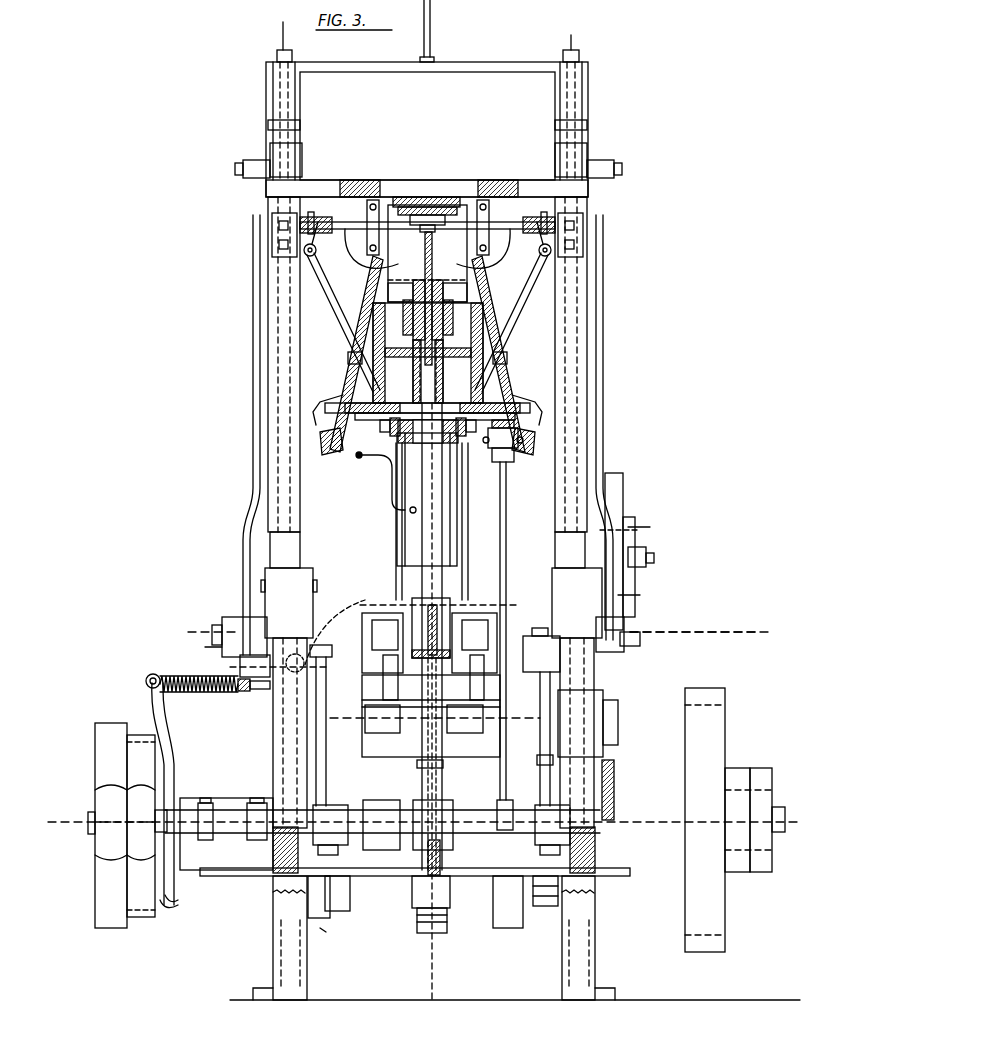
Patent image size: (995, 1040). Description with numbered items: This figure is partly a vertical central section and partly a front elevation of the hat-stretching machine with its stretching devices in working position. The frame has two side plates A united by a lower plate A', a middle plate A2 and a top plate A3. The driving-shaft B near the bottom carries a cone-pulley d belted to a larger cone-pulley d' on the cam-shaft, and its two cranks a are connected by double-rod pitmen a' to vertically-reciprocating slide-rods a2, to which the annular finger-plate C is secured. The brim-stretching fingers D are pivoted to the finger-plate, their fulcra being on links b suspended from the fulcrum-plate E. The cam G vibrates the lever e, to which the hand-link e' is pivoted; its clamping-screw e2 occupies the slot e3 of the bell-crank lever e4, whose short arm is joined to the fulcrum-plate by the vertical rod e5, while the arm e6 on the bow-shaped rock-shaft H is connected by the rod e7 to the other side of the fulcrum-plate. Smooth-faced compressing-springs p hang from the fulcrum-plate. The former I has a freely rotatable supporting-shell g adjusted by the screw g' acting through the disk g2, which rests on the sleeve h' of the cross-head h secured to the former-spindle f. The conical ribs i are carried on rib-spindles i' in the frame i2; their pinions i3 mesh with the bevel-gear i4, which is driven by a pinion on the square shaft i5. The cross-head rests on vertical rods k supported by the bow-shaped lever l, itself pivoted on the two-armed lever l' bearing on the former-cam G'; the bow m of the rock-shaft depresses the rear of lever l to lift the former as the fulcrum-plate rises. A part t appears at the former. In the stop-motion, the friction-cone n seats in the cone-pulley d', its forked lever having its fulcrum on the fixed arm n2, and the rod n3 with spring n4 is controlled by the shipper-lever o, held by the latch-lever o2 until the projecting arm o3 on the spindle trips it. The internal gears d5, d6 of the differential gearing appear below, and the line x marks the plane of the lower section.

The top plate A3 is at (427, 109).
The slot e3 is at (289, 164).
The fulcrum-plate E is at (427, 184).
The slide-rods a2 is at (575, 487).
The finger-plate C is at (427, 215).
The links b is at (367, 228).
The compressing-springs p is at (437, 248).
The brim-stretching fingers D is at (427, 307).
The supporting-shell g is at (427, 253).
The adjusting screw g' is at (437, 298).
The disk g2 is at (427, 278).
The sleeve of cross-head h' is at (440, 310).
The sleeve t is at (417, 317).
The former I is at (428, 353).
The ribs i is at (427, 354).
The rib-spindles i' is at (434, 346).
The frame i2 is at (427, 382).
The pinions i3 is at (437, 405).
The bevel-gear i4 is at (362, 415).
The cross-head h is at (424, 509).
The former-spindle f is at (432, 440).
The vertical rods k is at (427, 499).
The projecting arm o3 is at (378, 462).
The square shaft i5 is at (507, 527).
The side plates A is at (515, 598).
The rod e7 is at (253, 430).
The vertical rod e5 is at (606, 449).
The lever e is at (620, 551).
The link e' is at (647, 567).
The clamping-screw e2 is at (649, 545).
The bell-crank lever e4 is at (642, 565).
The rock-shaft H is at (474, 635).
The line x is at (700, 632).
The latch-lever o2 is at (232, 668).
The middle plate A2 is at (273, 636).
The bow m is at (440, 635).
The arm e6 is at (209, 643).
The bow-shaped lever l is at (423, 675).
The pitmen a' is at (435, 717).
The two-armed lever l' is at (424, 719).
The former-cam G' is at (445, 770).
The cam G is at (532, 763).
The driving-shaft B is at (427, 820).
The cranks a is at (441, 837).
The lower plate A' is at (405, 865).
The internal gear d6 is at (329, 896).
The fixed internal gear d5 is at (333, 929).
The cone-pulley d' is at (125, 825).
The cone-pulley d is at (125, 812).
The friction-cone n is at (166, 906).
The fixed arm n2 is at (179, 885).
The rod n3 is at (214, 690).
The spiral spring n4 is at (190, 690).
The shipper-lever o is at (242, 691).